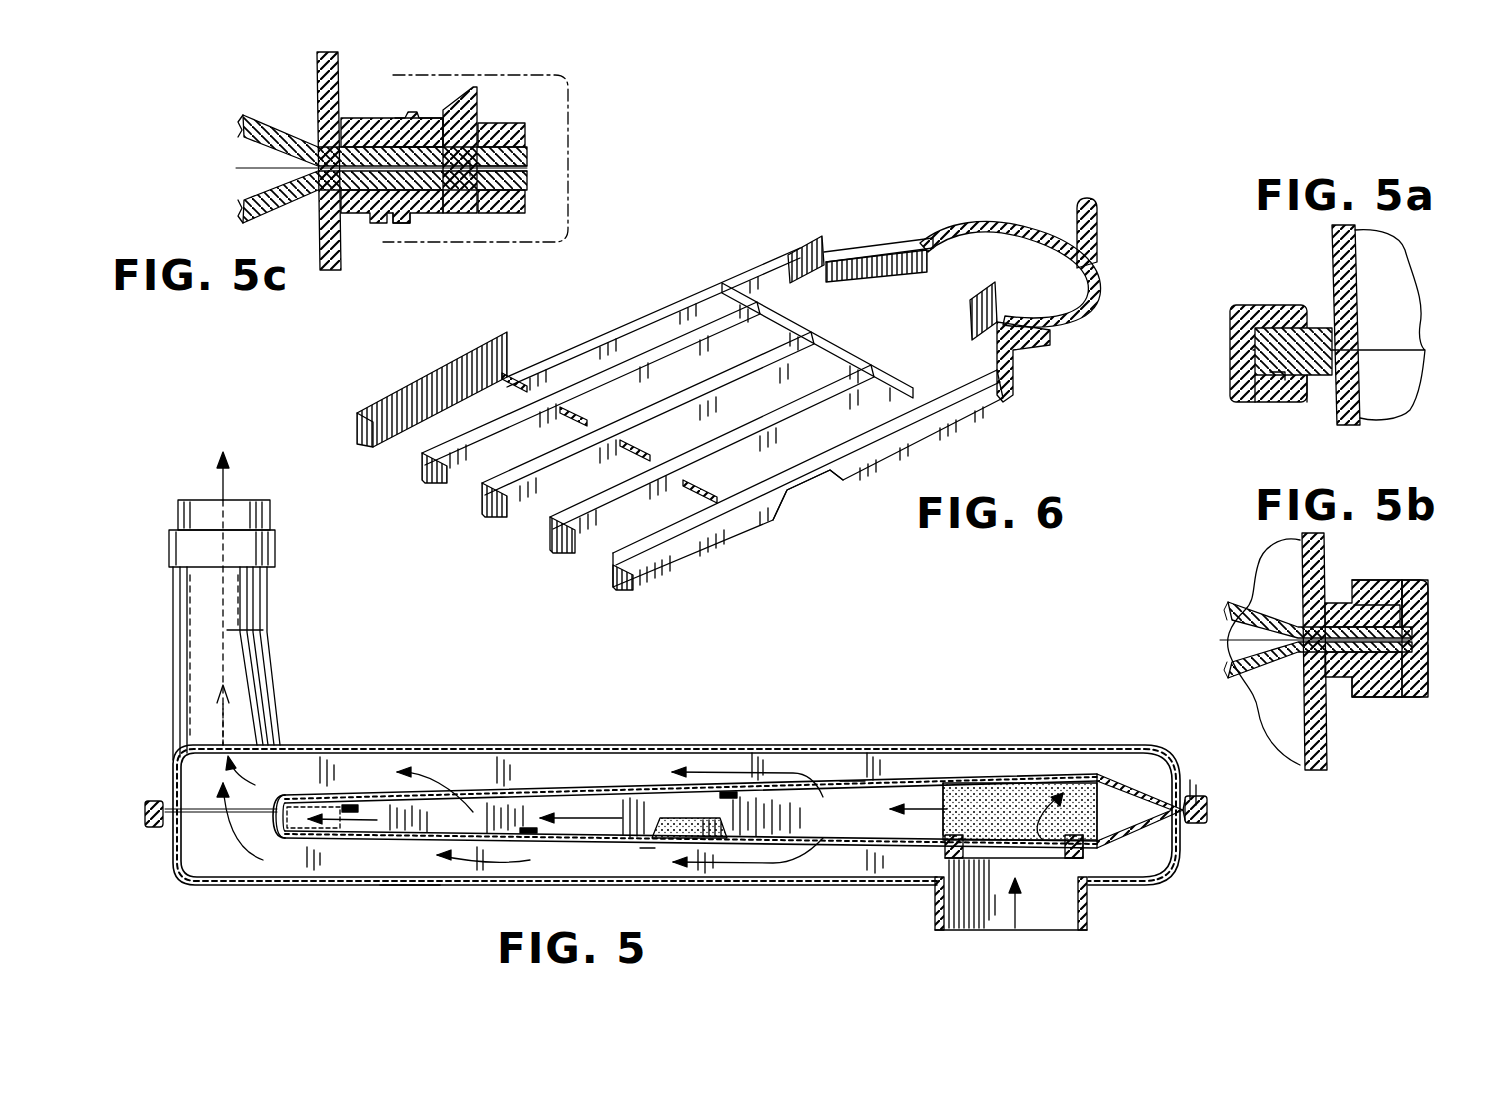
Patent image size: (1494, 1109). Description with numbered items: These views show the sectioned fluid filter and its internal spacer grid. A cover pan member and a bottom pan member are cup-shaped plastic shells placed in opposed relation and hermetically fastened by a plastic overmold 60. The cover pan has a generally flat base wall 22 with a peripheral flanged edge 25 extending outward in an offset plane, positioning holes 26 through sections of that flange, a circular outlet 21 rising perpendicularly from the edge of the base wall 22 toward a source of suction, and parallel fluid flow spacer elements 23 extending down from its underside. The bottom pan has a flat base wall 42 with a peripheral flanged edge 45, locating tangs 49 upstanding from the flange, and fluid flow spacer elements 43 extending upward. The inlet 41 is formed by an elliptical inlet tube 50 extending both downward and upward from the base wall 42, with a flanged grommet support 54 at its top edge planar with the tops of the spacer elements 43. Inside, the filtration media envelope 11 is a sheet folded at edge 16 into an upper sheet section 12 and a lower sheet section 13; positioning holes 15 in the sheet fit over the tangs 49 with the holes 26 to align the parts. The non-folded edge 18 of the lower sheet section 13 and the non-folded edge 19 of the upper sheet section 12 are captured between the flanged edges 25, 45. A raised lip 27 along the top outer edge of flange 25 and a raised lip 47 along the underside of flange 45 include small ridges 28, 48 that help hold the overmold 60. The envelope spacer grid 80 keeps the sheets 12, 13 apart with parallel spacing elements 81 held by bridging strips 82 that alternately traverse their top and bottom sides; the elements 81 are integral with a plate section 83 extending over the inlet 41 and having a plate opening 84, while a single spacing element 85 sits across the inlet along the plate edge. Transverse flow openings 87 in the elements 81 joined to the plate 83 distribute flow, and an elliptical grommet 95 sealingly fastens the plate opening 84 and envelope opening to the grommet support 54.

In FIG. 5, the filtration media envelope 11 is at (852, 763).
In FIG. 5c, the upper sheet section 12 is at (345, 237).
In FIG. 5, the upper sheet section 12 is at (567, 792).
In FIG. 5, the lower sheet section 13 is at (647, 848).
In FIG. 5c, the positioning holes 15 is at (440, 182).
In FIG. 5, the folded edge 16 is at (278, 842).
In FIG. 5b, the non-folded edge of lower sheet section 18 is at (1428, 667).
In FIG. 5, the non-folded edge of lower sheet section 18 is at (1197, 823).
In FIG. 5b, the non-folded edge of upper sheet section 19 is at (1428, 620).
In FIG. 5, the non-folded edge of upper sheet section 19 is at (1200, 795).
In FIG. 5, the outlet 21 is at (198, 500).
In FIG. 5, the base wall of cover pan member 22 is at (497, 750).
In FIG. 5, the fluid flow spacer elements 23 is at (375, 773).
In FIG. 5a, the peripheral flanged edge of cover pan member 25 is at (1316, 336).
In FIG. 5b, the peripheral flanged edge of cover pan member 25 is at (1338, 612).
In FIG. 5c, the positioning holes 26 is at (485, 118).
In FIG. 5c, the raised lip 27 is at (380, 116).
In FIG. 5b, the raised lip 27 is at (1365, 605).
In FIG. 5c, the small ridges 28 is at (412, 120).
In FIG. 5b, the small ridges 28 is at (1385, 610).
In FIG. 5, the inlet 41 is at (998, 910).
In FIG. 5, the base wall of bottom pan member 42 is at (410, 885).
In FIG. 5, the fluid flow spacer elements 43 is at (345, 860).
In FIG. 5a, the peripheral flanged edge of bottom pan member 45 is at (1322, 372).
In FIG. 5b, the peripheral flanged edge of bottom pan member 45 is at (1340, 665).
In FIG. 5c, the raised lip 47 is at (378, 226).
In FIG. 5a, the raised lip 47 is at (1270, 376).
In FIG. 5b, the raised lip 47 is at (1370, 680).
In FIG. 5c, the small ridges 48 is at (405, 225).
In FIG. 5a, the small ridges 48 is at (1262, 378).
In FIG. 5b, the small ridges 48 is at (1395, 690).
In FIG. 5c, the locating tangs 49 is at (468, 103).
In FIG. 5, the elliptical inlet tube 50 is at (926, 904).
In FIG. 5, the flanged grommet support 54 is at (1073, 858).
In FIG. 5c, the overmold 60 is at (570, 153).
In FIG. 5a, the overmold 60 is at (1232, 340).
In FIG. 5b, the overmold 60 is at (1420, 600).
In FIG. 5, the overmold 60 is at (1210, 806).
In FIG. 6, the envelope spacer grid 80 is at (722, 250).
In FIG. 6, the spacing elements 81 is at (880, 285).
In FIG. 6, the bridging strips 82 is at (517, 378).
In FIG. 6, the plate section 83 is at (1044, 350).
In FIG. 6, the plate opening 84 is at (1013, 268).
In FIG. 6, the single spacing element 85 is at (1100, 240).
In FIG. 5, the single spacing element 85 is at (1100, 800).
In FIG. 6, the transverse flow openings 87 is at (803, 487).
In FIG. 5, the transverse flow openings 87 is at (667, 818).
In FIG. 5, the elliptical grommet 95 is at (1043, 846).